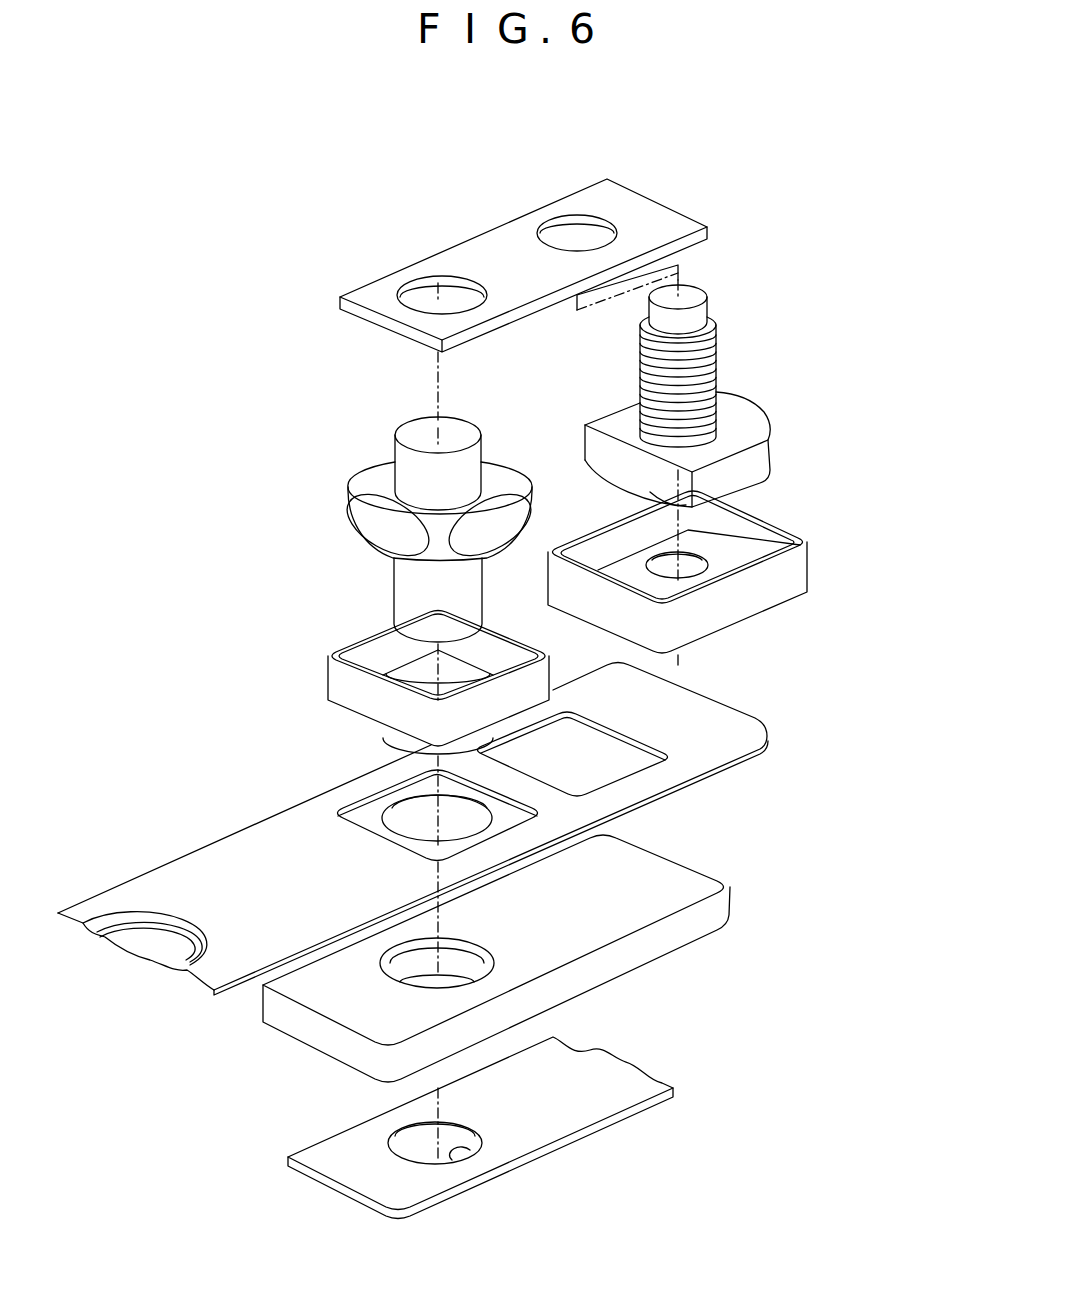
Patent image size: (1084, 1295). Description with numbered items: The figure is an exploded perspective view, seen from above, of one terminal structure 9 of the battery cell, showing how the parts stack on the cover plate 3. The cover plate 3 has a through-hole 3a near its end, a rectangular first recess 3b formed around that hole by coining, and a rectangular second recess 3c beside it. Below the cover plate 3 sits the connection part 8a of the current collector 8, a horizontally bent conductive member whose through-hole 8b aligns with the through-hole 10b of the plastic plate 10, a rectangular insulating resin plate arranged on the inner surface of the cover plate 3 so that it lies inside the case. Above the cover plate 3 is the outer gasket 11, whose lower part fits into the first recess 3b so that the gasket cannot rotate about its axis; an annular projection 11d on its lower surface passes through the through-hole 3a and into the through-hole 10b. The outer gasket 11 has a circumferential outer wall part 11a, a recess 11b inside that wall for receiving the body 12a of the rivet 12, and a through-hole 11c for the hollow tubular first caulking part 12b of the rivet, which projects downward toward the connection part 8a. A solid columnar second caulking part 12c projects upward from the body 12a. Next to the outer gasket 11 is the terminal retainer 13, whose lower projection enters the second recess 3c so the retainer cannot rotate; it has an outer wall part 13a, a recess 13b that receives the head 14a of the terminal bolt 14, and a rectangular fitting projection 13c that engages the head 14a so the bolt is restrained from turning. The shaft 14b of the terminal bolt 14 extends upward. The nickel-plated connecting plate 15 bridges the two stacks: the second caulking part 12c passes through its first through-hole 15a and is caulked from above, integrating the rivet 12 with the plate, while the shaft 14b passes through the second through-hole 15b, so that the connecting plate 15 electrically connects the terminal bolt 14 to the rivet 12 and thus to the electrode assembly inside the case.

The cover plate 3 is at (175, 887).
The through-hole 3a is at (397, 808).
The first recess 3b is at (360, 815).
The second recess 3c is at (603, 768).
The current collector 8 is at (502, 1137).
The connection part 8a is at (502, 1137).
The through-hole 8b is at (473, 1153).
The terminal structure 9 is at (272, 146).
The plastic plate 10 is at (499, 965).
The through-hole 10b is at (393, 977).
The outer gasket 11 is at (217, 568).
The outer wall part 11a is at (348, 687).
The recess 11b is at (417, 680).
The through-hole 11c is at (364, 658).
The annular projection 11d is at (373, 750).
The rivet 12 is at (231, 542).
The body 12a is at (383, 488).
The first caulking part 12b is at (408, 585).
The second caulking part 12c is at (415, 467).
The terminal retainer 13 is at (904, 513).
The outer wall part 13a is at (787, 577).
The recess 13b is at (758, 542).
The fitting projection 13c is at (712, 576).
The terminal bolt 14 is at (876, 315).
The head 14a is at (758, 458).
The shaft 14b is at (720, 370).
The connecting plate 15 is at (523, 236).
The first through-hole 15a is at (427, 283).
The second through-hole 15b is at (577, 232).